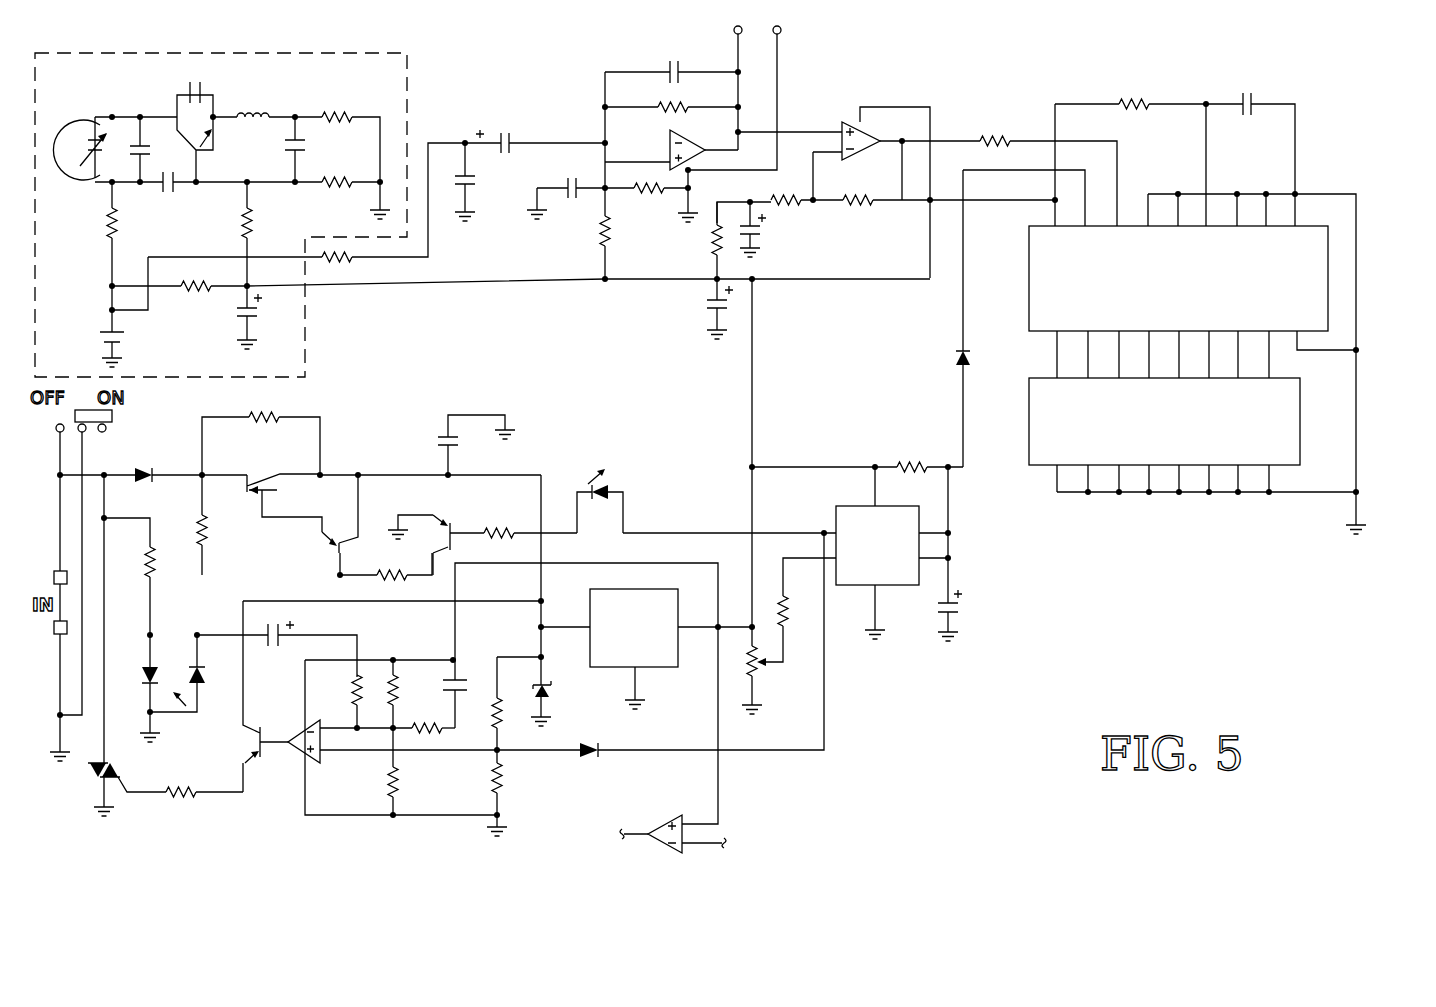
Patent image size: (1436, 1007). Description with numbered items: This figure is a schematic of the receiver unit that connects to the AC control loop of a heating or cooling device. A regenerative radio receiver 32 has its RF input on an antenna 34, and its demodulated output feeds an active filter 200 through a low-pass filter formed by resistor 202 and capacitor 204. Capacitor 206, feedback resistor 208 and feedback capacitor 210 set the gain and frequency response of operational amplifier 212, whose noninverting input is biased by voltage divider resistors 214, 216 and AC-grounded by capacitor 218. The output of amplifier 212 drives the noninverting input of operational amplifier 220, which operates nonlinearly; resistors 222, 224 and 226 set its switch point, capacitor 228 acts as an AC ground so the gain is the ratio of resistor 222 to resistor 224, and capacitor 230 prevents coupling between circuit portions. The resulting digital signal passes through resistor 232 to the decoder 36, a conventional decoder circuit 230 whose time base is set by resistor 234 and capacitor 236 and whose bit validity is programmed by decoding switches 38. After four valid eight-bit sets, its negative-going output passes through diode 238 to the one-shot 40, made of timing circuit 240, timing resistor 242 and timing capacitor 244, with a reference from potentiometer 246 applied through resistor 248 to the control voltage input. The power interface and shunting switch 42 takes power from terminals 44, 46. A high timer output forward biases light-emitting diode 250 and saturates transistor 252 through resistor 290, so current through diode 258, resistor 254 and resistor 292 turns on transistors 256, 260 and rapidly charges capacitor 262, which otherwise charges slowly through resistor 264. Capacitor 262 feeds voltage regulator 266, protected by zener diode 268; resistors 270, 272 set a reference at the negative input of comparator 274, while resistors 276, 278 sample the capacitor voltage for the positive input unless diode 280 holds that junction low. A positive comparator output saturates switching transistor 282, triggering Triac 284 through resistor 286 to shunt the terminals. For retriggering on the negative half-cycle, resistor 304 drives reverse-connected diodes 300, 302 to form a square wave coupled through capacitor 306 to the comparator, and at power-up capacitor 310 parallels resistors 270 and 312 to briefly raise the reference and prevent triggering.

The radio receiver 32 is at (305, 323).
The antenna 34 is at (87, 116).
The decoder 36 is at (1366, 184).
The decoding switches 38 is at (1029, 430).
The retriggerable one-shot 40 is at (900, 622).
The power interface and shunting switch 42 is at (263, 826).
The control loop terminal 44 is at (54, 577).
The control loop terminal 46 is at (54, 627).
The active filter 200 is at (544, 77).
The resistor 202 is at (348, 262).
The capacitor 204 is at (470, 186).
The capacitor 206 is at (518, 122).
The feedback resistor 208 is at (668, 112).
The feedback capacitor 210 is at (668, 65).
The operational amplifier 212 is at (696, 124).
The voltage divider resistor 214 is at (644, 196).
The voltage divider resistor 216 is at (600, 236).
The capacitor 218 is at (566, 185).
The operational amplifier 220 is at (848, 122).
The resistor 222 is at (856, 210).
The resistor 224 is at (788, 210).
The resistor 226 is at (711, 246).
The capacitor 228 is at (761, 240).
The decoder circuit 230 is at (705, 303).
The resistor 232 is at (992, 133).
The resistor 234 is at (1122, 97).
The capacitor 236 is at (1257, 84).
The diode 238 is at (957, 360).
The timing circuit 240 is at (858, 505).
The timing resistor 242 is at (905, 460).
The timing capacitor 244 is at (963, 607).
The potentiometer 246 is at (760, 682).
The resistor 248 is at (787, 618).
The light-emitting diode 250 is at (587, 486).
The transistor 252 is at (452, 522).
The resistor 254 is at (210, 528).
The transistor 256 is at (330, 547).
The diode 258 is at (141, 468).
The transistor 260 is at (251, 480).
The capacitor 262 is at (440, 441).
The resistor 264 is at (279, 420).
The voltage regulator 266 is at (654, 672).
The zener diode 268 is at (549, 690).
The voltage divider resistor 270 is at (400, 698).
The voltage divider resistor 272 is at (400, 786).
The comparator 274 is at (298, 752).
The voltage divider resistor 276 is at (500, 703).
The voltage divider resistor 278 is at (504, 789).
The diode 280 is at (588, 760).
The switching transistor 282 is at (257, 731).
The Triac 284 is at (97, 778).
The resistor 286 is at (180, 798).
The resistor 290 is at (491, 528).
The resistor 292 is at (380, 578).
The diode 300 is at (143, 672).
The diode 302 is at (209, 678).
The resistor 304 is at (160, 565).
The capacitor 306 is at (270, 648).
The capacitor 310 is at (478, 679).
The resistor 312 is at (430, 735).